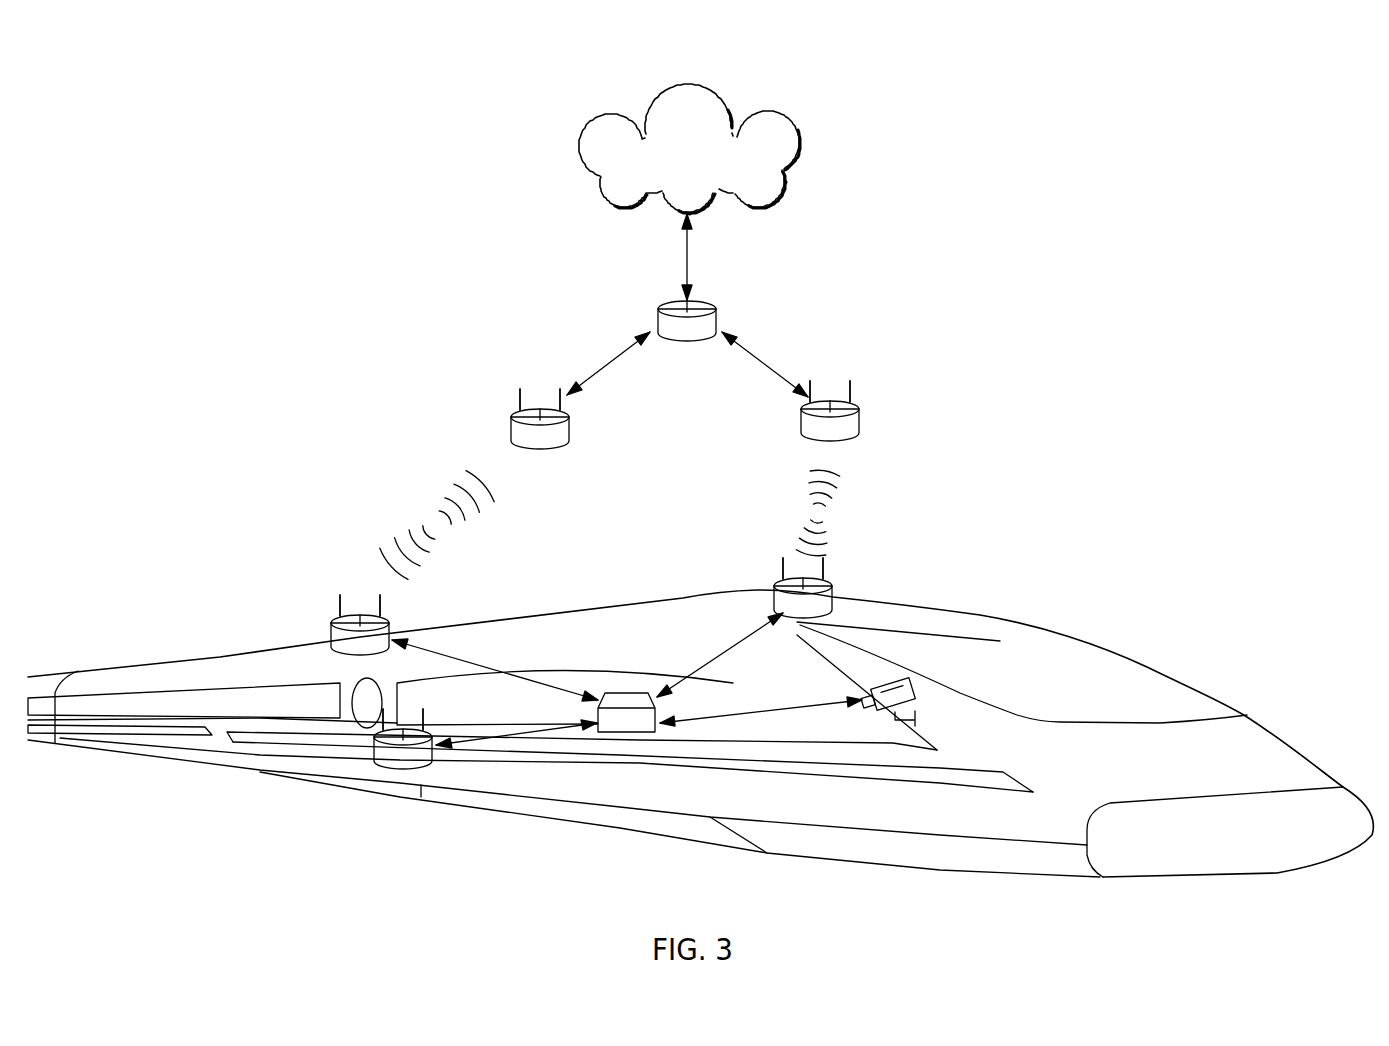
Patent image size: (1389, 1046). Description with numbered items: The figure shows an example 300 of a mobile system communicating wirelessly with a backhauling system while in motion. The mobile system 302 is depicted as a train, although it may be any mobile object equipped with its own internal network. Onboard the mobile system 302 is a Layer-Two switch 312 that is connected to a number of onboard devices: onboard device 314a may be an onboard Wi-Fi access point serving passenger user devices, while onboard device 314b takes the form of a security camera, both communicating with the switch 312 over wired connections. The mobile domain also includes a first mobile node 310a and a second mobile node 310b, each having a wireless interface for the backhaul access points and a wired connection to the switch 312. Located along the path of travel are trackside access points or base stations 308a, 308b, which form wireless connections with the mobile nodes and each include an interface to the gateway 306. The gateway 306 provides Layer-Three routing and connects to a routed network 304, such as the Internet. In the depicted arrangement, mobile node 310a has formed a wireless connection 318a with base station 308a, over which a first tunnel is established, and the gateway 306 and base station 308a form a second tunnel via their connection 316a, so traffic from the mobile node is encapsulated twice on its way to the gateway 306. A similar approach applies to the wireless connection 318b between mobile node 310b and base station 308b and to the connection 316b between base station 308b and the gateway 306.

The example of a mobile system communicating wirelessly 300 is at (980, 83).
The mobile system 302 is at (1053, 630).
The L3-routed network 304 is at (775, 131).
The gateway 306 is at (717, 320).
The trackside access point/base station 308a is at (859, 420).
The trackside access point/base station 308b is at (513, 431).
The first mobile node 310a is at (766, 580).
The second mobile node 310b is at (330, 630).
The Layer-2 switch 312 is at (640, 695).
The onboard device 314a is at (403, 762).
The onboard device 314b is at (895, 682).
The connection 316a is at (763, 352).
The connection 316b is at (599, 357).
The wireless connection 318a is at (840, 509).
The wireless connection 318b is at (422, 527).